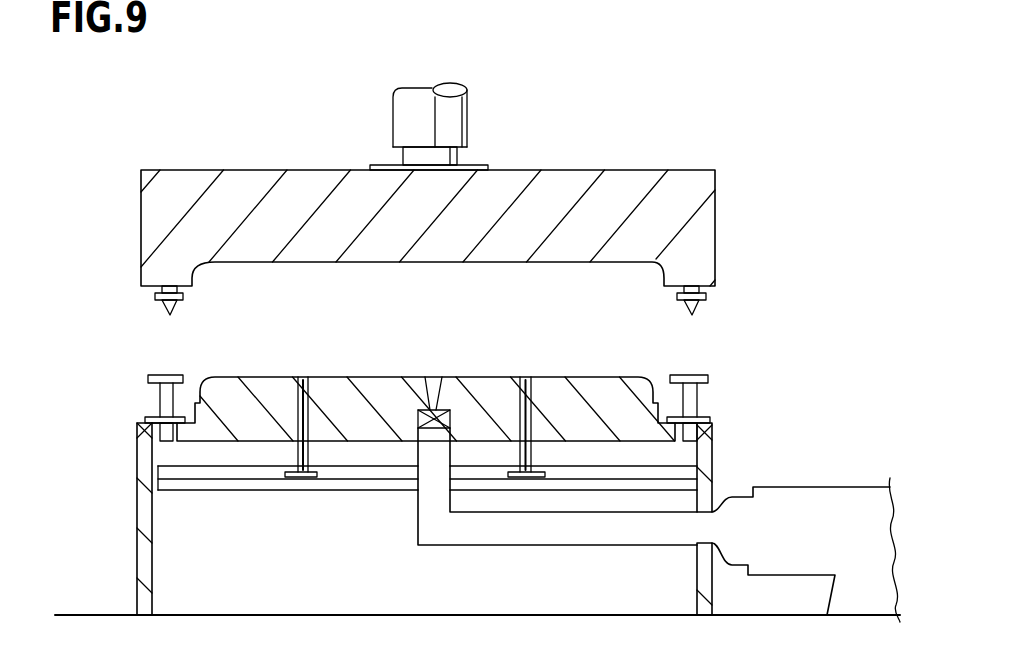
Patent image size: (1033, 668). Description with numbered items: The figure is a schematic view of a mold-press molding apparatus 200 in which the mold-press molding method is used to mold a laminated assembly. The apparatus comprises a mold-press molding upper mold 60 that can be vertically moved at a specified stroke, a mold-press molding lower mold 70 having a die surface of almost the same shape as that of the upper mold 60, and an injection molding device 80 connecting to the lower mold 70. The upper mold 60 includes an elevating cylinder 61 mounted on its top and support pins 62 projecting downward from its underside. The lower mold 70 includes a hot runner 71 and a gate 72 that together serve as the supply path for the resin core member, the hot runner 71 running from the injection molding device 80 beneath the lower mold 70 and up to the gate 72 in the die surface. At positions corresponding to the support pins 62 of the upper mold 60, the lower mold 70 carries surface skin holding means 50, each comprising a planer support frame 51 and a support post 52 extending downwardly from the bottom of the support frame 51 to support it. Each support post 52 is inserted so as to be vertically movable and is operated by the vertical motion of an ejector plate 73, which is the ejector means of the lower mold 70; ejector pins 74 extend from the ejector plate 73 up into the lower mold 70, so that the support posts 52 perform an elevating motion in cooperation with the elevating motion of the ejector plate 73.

The mold-press molding apparatus 200 is at (756, 216).
The mold-press molding upper mold 60 is at (158, 226).
The elevating cylinder 61 is at (405, 113).
The support pins 62 is at (184, 302).
The surface skin holding means 50 is at (144, 396).
The support frame 51 is at (172, 375).
The support post 52 is at (137, 433).
The mold-press molding lower mold 70 is at (350, 405).
The hot runner 71 is at (508, 528).
The gate 72 is at (437, 383).
The ejector plate 73 is at (364, 472).
The ejector pin 74 is at (300, 410).
The injection molding device 80 is at (812, 487).